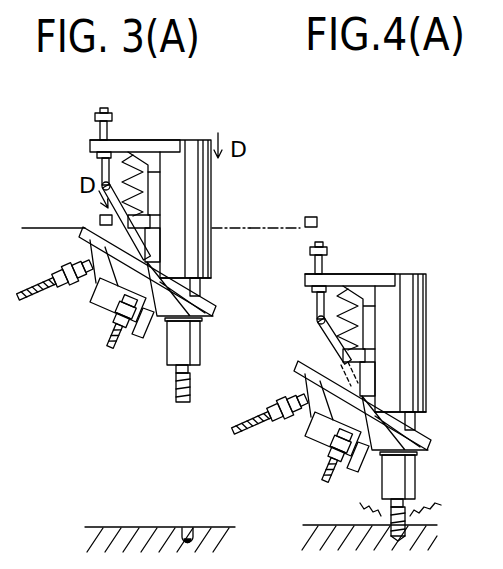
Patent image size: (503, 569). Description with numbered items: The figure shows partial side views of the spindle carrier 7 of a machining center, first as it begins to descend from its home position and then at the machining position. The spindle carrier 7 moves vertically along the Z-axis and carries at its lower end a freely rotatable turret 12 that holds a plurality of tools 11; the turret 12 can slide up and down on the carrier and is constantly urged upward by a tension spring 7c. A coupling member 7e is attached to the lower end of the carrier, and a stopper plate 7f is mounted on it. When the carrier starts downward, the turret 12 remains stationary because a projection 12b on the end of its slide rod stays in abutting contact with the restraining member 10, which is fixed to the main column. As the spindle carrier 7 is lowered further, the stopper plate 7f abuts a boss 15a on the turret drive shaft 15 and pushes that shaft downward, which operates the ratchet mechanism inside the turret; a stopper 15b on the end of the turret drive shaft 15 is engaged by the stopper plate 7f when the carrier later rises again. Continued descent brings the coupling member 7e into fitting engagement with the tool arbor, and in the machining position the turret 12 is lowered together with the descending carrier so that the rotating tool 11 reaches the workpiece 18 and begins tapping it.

In FIG. 3A, the spindle carrier 7 is at (212, 203).
In FIG. 3A, the tension spring 7c is at (133, 163).
In FIG. 3A, the coupling member 7e is at (207, 289).
In FIG. 3A, the stopper plate 7f is at (147, 150).
In FIG. 3A, the restraining member 10 is at (104, 216).
In FIG. 4A, the restraining member 10 is at (318, 222).
In FIG. 3A, the tool 11 is at (45, 293).
In FIG. 4A, the tool 11 is at (259, 420).
In FIG. 3A, the turret 12 is at (217, 318).
In FIG. 3A, the projection 12b is at (146, 262).
In FIG. 3A, the turret drive shaft 15 is at (117, 188).
In FIG. 4A, the turret drive shaft 15 is at (356, 302).
In FIG. 3A, the boss 15a is at (92, 152).
In FIG. 3A, the stopper 15b is at (97, 115).
In FIG. 3A, the workpiece 18 is at (115, 527).
In FIG. 4A, the workpiece 18 is at (308, 525).